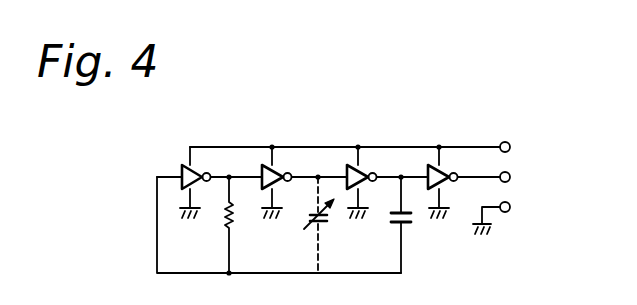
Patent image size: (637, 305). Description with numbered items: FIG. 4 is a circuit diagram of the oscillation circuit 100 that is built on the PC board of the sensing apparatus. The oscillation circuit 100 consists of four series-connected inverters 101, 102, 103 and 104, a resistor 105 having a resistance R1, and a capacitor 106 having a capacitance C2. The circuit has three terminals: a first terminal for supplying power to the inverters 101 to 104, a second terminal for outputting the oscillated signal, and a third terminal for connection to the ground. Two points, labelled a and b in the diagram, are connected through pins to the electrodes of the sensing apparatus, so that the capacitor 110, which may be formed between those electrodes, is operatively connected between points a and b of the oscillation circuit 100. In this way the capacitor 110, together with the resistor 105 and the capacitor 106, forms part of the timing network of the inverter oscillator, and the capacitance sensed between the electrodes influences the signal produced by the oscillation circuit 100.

The oscillation circuit 100 is at (446, 100).
The inverter 101 is at (182, 165).
The inverter 102 is at (263, 165).
The inverter 103 is at (348, 165).
The inverter 104 is at (429, 165).
The resistor 105 is at (221, 219).
The capacitor 106 is at (407, 227).
The capacitor 110 is at (303, 231).